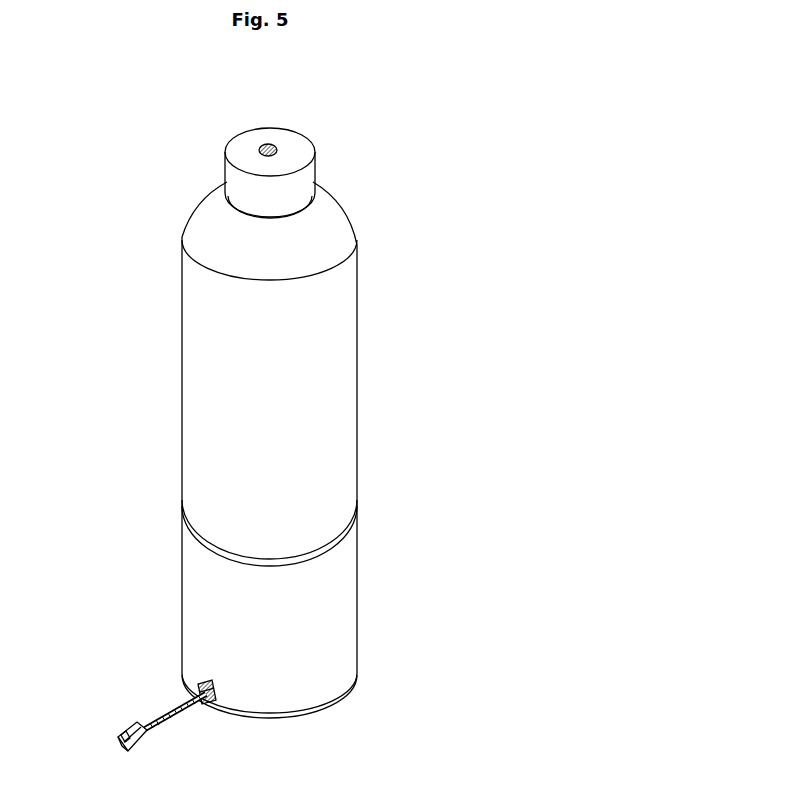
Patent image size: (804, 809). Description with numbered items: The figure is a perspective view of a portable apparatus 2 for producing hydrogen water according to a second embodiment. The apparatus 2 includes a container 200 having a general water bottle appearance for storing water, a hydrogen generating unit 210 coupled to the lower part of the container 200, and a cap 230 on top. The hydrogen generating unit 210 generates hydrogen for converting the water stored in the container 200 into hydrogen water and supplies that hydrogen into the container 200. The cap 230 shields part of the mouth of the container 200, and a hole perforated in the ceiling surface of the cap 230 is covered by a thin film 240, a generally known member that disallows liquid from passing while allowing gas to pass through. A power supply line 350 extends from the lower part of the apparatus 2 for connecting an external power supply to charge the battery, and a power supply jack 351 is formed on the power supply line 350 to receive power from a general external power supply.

The portable apparatus for producing hydrogen water 2 is at (360, 178).
The container 200 is at (329, 345).
The hydrogen generating unit 210 is at (337, 602).
The cap 230 is at (225, 166).
The thin film 240 is at (268, 145).
The power supply line 350 is at (182, 712).
The power supply jack 351 is at (122, 723).